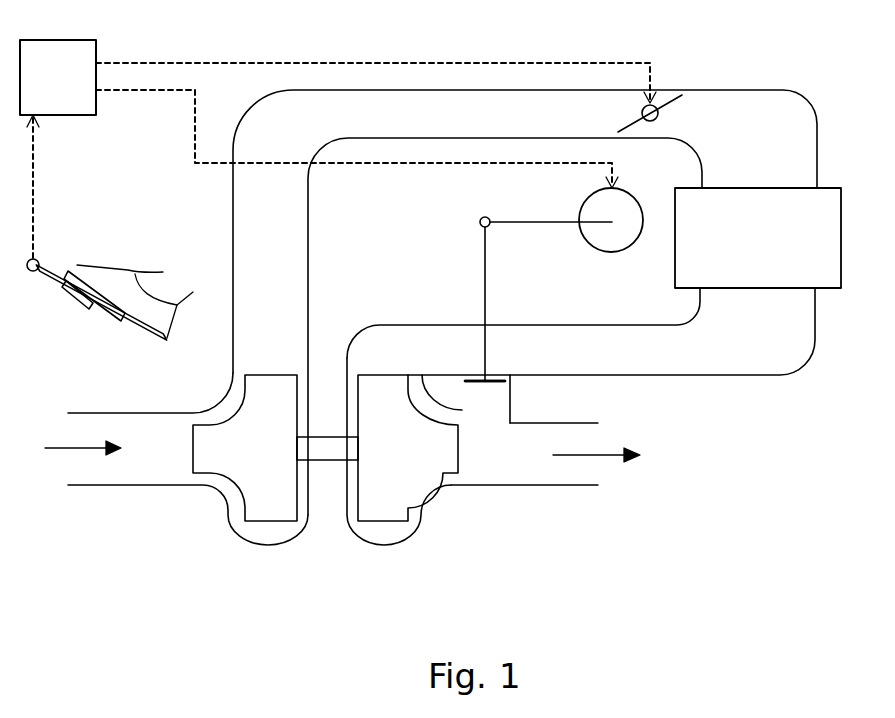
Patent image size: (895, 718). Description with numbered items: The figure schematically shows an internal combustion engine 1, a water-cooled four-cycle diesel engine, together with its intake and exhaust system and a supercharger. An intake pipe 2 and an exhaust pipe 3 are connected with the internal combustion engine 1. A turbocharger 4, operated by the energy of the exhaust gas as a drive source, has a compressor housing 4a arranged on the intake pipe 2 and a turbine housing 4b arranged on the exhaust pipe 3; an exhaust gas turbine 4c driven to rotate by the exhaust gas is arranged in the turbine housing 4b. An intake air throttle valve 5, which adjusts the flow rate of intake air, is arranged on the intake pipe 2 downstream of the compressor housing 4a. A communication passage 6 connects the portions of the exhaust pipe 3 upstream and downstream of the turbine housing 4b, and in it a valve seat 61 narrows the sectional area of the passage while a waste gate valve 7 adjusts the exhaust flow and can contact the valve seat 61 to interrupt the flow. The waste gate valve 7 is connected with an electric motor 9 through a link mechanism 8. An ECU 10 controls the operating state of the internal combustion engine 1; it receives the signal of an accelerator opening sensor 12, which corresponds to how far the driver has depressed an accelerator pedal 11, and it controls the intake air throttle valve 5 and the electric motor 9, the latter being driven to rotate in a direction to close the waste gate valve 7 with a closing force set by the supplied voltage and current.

The internal combustion engine 1 is at (828, 290).
The intake pipe 2 is at (803, 157).
The exhaust pipe 3 is at (738, 362).
The turbocharger 4 is at (272, 483).
The compressor housing 4a is at (260, 547).
The turbine housing 4b is at (390, 547).
The exhaust gas turbine 4c is at (370, 523).
The intake air throttle valve 5 is at (672, 108).
The communication passage 6 is at (490, 400).
The valve seat 61 is at (507, 373).
The waste gate valve 7 is at (463, 383).
The link mechanism 8 is at (485, 262).
The electric motor 9 is at (608, 252).
The ECU 10 is at (96, 115).
The accelerator pedal 11 is at (112, 315).
The accelerator opening sensor 12 is at (37, 260).